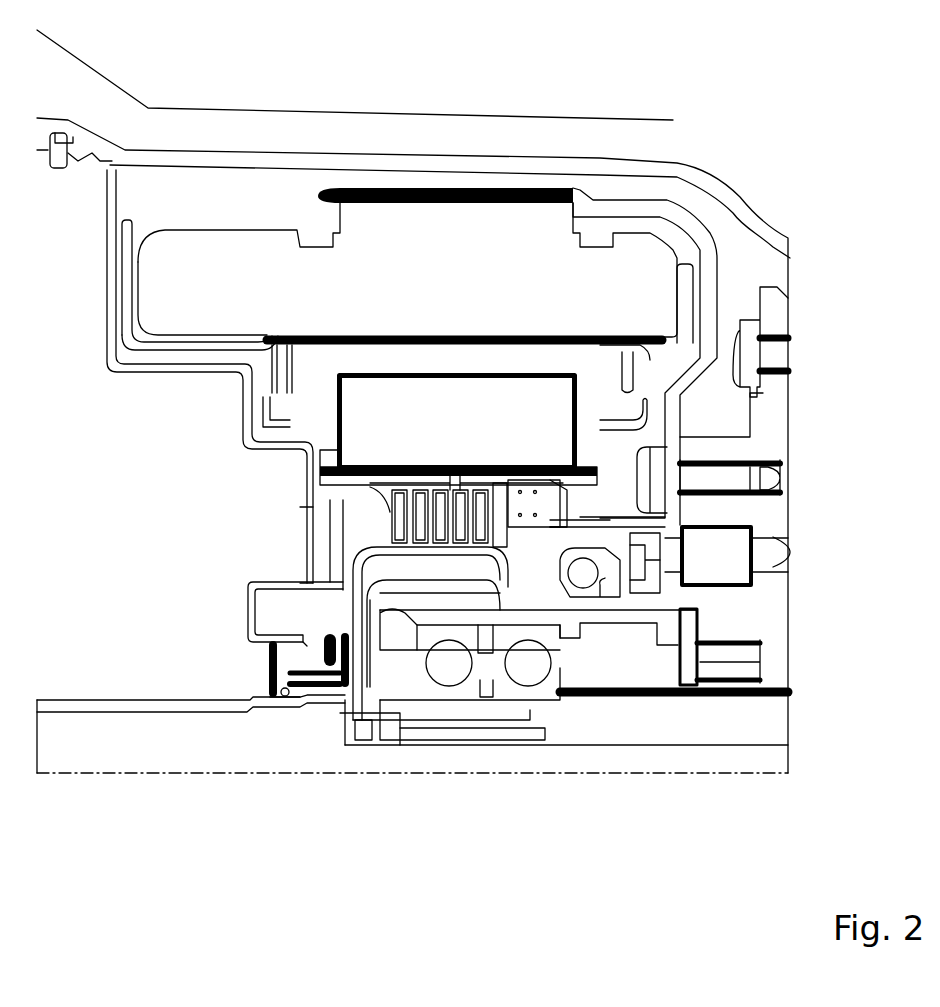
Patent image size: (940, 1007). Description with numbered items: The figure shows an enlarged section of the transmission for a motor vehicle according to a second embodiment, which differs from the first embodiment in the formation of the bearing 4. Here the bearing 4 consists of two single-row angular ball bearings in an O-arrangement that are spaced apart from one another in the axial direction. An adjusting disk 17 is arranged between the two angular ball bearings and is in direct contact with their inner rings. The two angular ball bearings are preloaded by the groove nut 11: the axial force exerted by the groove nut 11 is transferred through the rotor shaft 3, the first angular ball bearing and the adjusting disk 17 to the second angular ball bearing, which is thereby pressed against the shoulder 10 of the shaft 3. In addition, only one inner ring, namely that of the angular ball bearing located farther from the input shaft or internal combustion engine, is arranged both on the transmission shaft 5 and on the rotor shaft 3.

The rotor shaft 3 is at (445, 705).
The bearing 4 is at (568, 655).
The transmission shaft 5 is at (740, 727).
The shoulder 10 is at (560, 700).
The groove nut 11 is at (372, 725).
The adjusting disk 17 is at (490, 680).